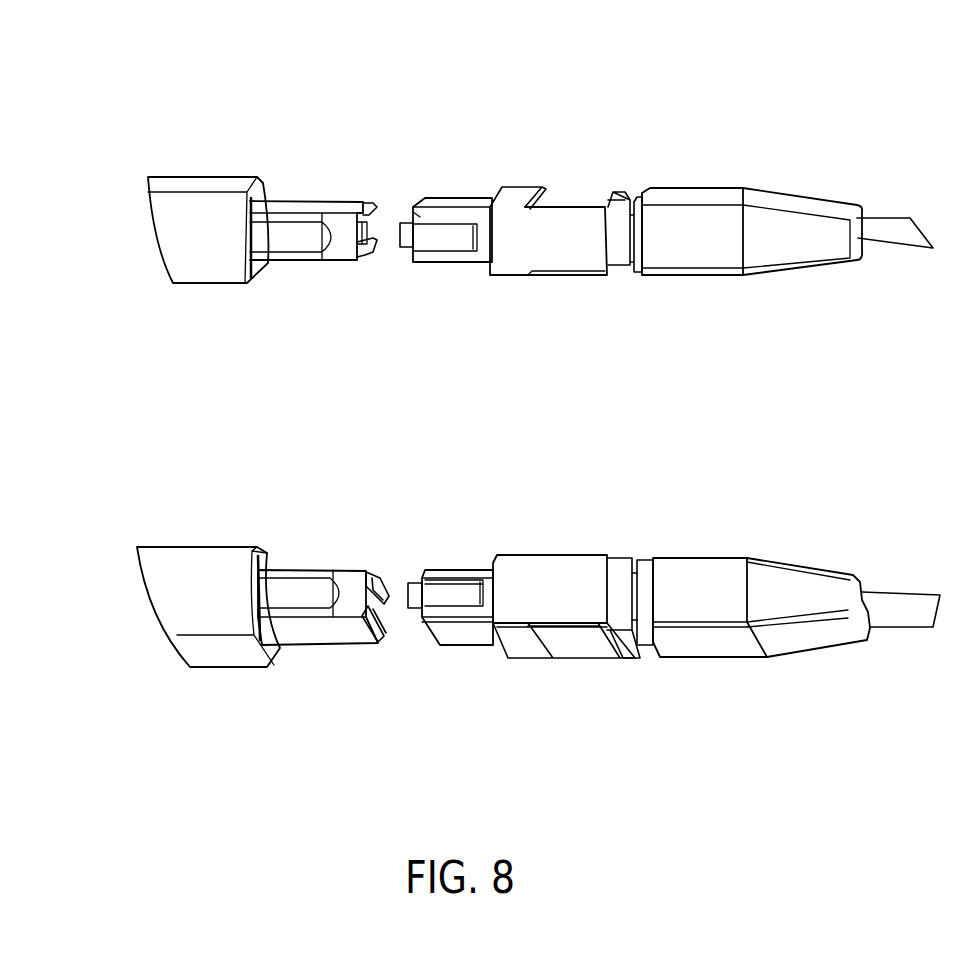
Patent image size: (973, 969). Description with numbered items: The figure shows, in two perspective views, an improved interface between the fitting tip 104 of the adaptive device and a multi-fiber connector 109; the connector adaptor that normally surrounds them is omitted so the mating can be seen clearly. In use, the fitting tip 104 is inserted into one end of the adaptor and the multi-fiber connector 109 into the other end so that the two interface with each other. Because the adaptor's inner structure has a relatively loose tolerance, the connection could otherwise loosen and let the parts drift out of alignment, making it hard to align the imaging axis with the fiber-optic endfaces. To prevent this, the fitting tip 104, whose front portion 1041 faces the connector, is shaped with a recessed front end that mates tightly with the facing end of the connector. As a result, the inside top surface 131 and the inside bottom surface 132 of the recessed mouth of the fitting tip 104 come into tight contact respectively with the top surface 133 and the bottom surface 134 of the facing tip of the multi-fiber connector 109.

The fitting tip 104 is at (177, 167).
The front portion 1041 is at (293, 180).
The inside top surface 131 is at (392, 198).
The inside bottom surface 132 is at (390, 245).
The top surface 133 is at (407, 198).
The bottom surface 134 is at (408, 250).
The multi-fiber connector 109 is at (515, 190).